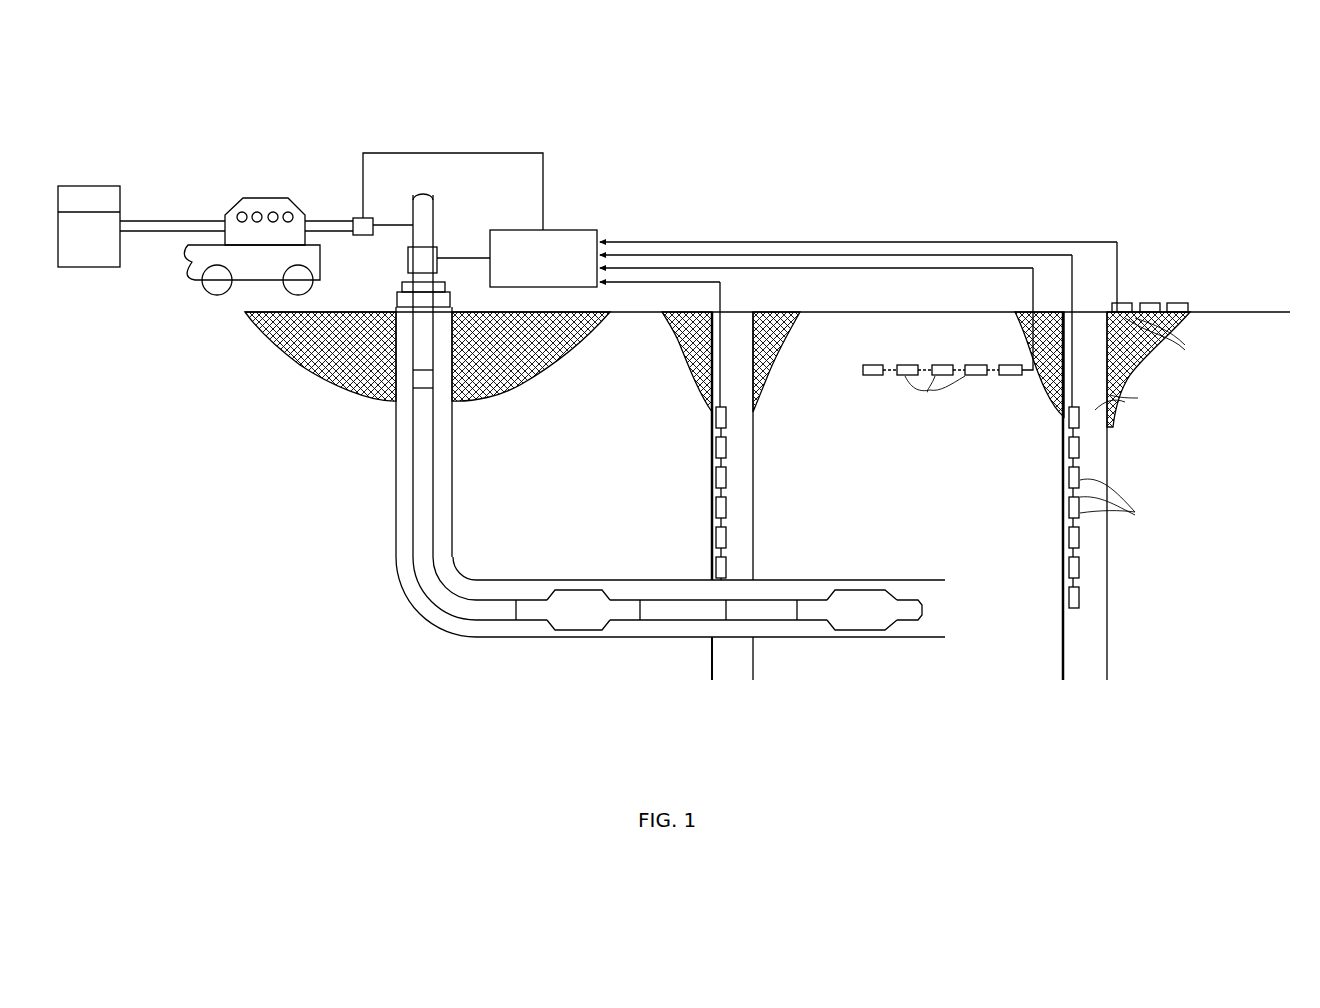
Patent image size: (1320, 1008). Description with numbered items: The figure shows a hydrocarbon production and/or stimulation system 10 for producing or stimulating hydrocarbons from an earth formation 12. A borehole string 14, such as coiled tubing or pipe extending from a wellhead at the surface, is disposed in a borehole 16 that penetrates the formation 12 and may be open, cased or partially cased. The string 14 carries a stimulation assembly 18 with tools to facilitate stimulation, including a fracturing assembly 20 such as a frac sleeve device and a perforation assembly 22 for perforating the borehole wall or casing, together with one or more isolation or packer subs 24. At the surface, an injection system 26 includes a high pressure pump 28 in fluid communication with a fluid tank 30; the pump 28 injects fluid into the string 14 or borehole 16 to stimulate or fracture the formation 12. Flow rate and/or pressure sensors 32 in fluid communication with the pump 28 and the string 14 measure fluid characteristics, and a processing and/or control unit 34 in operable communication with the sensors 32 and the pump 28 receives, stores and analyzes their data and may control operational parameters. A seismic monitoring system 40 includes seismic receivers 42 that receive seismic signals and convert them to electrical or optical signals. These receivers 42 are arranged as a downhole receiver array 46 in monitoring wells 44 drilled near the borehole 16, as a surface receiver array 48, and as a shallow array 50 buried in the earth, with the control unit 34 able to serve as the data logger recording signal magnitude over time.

The hydrocarbon production and/or stimulation system 10 is at (687, 149).
The earth formation 12 is at (325, 362).
The borehole string 14 is at (425, 490).
The borehole 16 is at (402, 560).
The stimulation assembly 18 is at (800, 546).
The fracturing assembly 20 is at (672, 618).
The perforation assembly 22 is at (775, 613).
The isolation or packer sub 24 is at (568, 592).
The injection system 26 is at (222, 158).
The high pressure pump 28 is at (293, 208).
The fluid tank 30 is at (85, 262).
The flow rate and/or pressure sensors 32 is at (360, 237).
The processing and/or control unit 34 is at (560, 272).
The seismic monitoring system 40 is at (968, 188).
The seismic receivers 42 is at (1064, 429).
The monitoring well 44 is at (755, 488).
The downhole receiver array 46 is at (735, 452).
The surface receiver array 48 is at (1162, 290).
The shallow array 50 is at (958, 360).